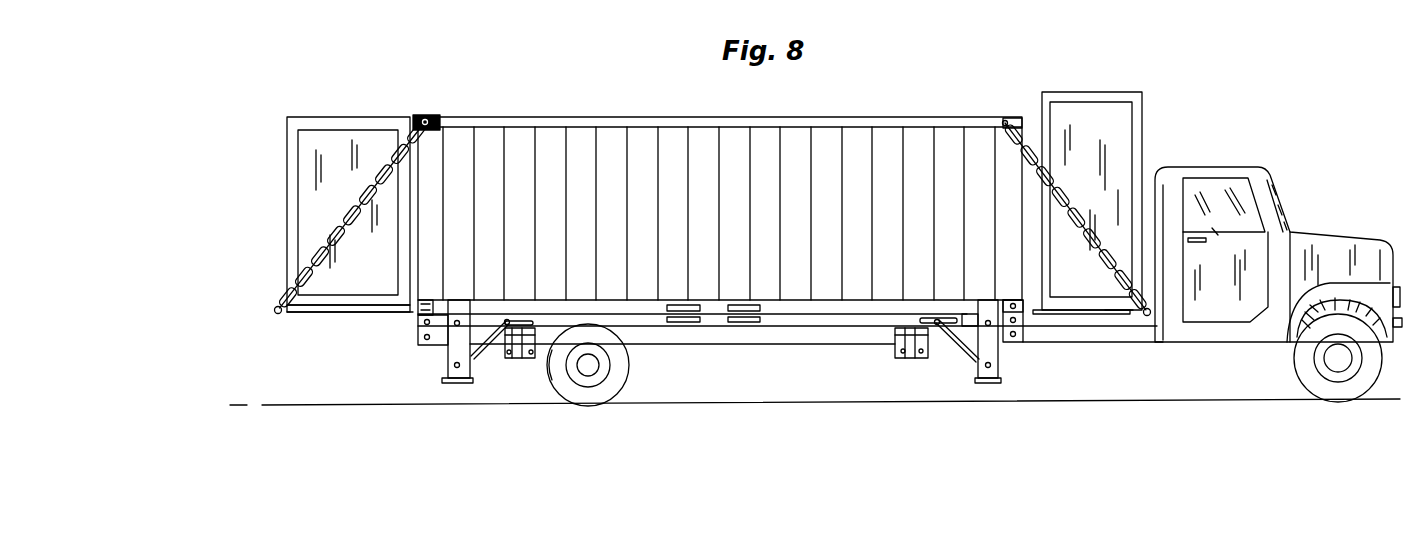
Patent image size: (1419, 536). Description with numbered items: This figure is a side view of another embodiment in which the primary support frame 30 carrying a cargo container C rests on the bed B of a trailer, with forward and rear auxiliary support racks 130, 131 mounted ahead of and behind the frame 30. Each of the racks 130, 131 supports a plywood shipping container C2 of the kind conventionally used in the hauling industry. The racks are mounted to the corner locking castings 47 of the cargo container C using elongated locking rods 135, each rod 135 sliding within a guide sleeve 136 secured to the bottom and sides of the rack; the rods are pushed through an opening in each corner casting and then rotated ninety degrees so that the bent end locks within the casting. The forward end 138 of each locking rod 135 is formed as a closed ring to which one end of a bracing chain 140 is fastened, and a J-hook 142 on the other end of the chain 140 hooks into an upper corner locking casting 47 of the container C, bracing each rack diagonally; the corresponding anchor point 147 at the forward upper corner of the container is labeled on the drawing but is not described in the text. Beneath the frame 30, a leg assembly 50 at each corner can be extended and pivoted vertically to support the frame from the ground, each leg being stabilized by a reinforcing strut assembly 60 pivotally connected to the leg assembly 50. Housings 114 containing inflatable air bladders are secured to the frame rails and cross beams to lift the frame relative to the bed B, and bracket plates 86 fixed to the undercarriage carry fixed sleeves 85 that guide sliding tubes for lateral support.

The cargo container C is at (640, 132).
The plywood shipping container C2 is at (287, 167).
The bracing chain 140 is at (322, 237).
The forward end of locking rod 138 is at (273, 310).
The forward auxiliary support rack 130 is at (290, 316).
The rear auxiliary support rack 131 is at (351, 321).
The locking rod 135 is at (418, 320).
The leg assembly 50 is at (441, 364).
The corner locking casting 47 is at (440, 118).
The J-hook 142 is at (425, 120).
The chain anchor 147 is at (1002, 126).
The reinforcing strut assembly 60 is at (487, 354).
The bracket plate 86 is at (527, 360).
The fixed sleeve 85 is at (908, 358).
The primary support frame 30 is at (813, 348).
The bed B is at (699, 362).
The housing 114 is at (970, 320).
The guide sleeve 136 is at (1117, 316).